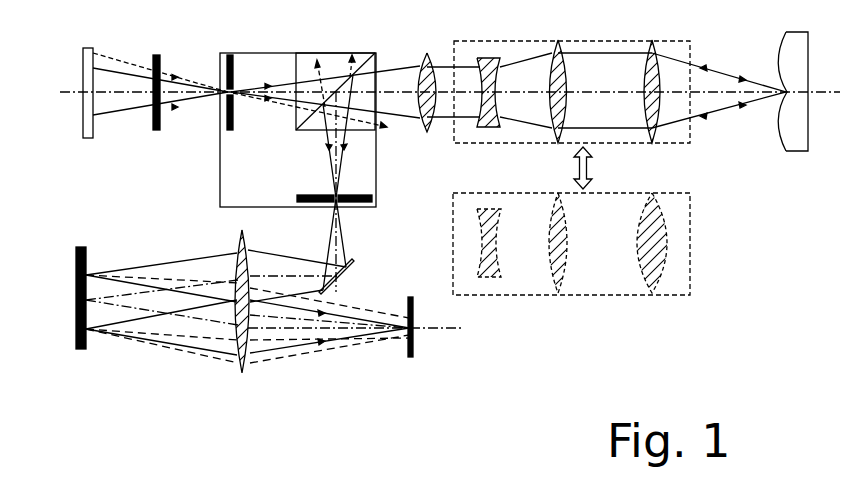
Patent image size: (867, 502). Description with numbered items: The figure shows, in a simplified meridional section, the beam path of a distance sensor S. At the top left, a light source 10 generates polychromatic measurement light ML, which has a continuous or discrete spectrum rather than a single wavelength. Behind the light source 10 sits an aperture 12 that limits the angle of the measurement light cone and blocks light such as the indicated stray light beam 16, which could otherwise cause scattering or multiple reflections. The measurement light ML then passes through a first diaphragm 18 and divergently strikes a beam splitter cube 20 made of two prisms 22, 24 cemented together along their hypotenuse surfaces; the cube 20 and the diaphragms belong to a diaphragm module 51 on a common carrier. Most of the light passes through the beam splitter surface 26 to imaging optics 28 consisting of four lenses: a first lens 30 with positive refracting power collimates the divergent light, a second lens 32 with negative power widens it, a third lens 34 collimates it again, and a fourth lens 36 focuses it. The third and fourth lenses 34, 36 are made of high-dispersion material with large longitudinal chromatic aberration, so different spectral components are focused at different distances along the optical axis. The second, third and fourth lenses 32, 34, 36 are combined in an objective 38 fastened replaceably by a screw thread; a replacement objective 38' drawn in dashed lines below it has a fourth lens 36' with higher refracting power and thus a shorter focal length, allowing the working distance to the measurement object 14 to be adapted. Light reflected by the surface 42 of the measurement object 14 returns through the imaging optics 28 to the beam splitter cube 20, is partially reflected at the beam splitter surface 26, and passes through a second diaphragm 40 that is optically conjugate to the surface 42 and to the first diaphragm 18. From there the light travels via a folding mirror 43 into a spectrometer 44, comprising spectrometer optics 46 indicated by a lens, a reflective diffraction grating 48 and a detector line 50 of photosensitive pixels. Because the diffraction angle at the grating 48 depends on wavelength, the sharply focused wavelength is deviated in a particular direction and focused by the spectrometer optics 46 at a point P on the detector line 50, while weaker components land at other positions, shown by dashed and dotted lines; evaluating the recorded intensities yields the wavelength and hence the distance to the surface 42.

The light source 10 is at (93, 135).
The measurement light ML is at (120, 112).
The aperture 12 is at (160, 126).
The diaphragm module 51 is at (220, 70).
The beam splitter cube 20 is at (283, 62).
The first diaphragm 18 is at (233, 126).
The stray light beam 16 is at (290, 112).
The prism 22 is at (320, 51).
The beam splitter surface 26 is at (356, 52).
The prism 24 is at (372, 60).
The second diaphragm 40 is at (356, 195).
The first lens 30 is at (434, 52).
The second lens 32 is at (498, 60).
The third lens 34 is at (565, 45).
The fourth lens 36 is at (672, 79).
The objective 38 is at (572, 113).
The replacement objective 38' is at (588, 227).
The fourth lens of the replacement objective 36' is at (677, 261).
The imaging optics 28 is at (466, 152).
The surface of the measurement object 42 is at (780, 134).
The measurement object 14 is at (795, 152).
The reflective diffraction grating 48 is at (86, 258).
The spectrometer optics 46 is at (238, 246).
The folding mirror 43 is at (355, 263).
The detector line 50 is at (413, 297).
The point P is at (401, 311).
The spectrometer 44 is at (190, 380).
The distance sensor S is at (488, 338).